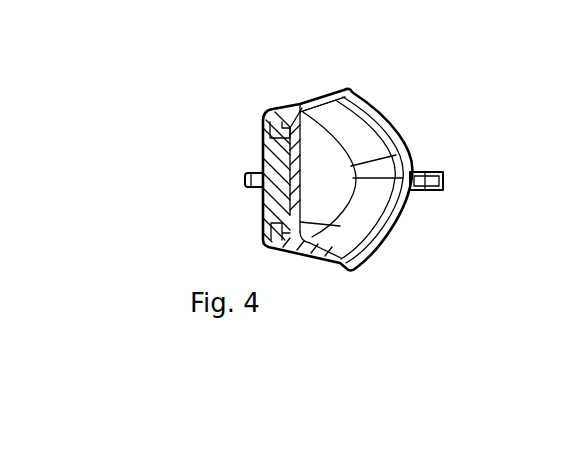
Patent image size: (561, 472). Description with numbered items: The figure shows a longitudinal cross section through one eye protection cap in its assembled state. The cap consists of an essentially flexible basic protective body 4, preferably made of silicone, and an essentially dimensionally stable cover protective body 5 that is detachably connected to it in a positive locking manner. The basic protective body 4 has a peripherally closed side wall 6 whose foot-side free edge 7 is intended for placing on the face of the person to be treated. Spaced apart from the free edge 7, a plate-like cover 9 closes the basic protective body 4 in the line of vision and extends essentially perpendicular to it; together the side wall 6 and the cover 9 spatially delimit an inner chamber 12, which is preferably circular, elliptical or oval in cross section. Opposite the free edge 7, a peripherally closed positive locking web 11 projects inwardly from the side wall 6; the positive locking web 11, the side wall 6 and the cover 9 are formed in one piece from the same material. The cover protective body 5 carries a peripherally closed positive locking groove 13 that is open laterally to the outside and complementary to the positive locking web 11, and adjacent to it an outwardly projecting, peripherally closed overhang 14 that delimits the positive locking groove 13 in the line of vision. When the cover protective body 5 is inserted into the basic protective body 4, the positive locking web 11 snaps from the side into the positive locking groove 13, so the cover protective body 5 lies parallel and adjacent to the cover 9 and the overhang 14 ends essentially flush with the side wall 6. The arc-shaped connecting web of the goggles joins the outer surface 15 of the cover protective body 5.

The basic protective body 4 is at (366, 94).
The cover protective body 5 is at (261, 164).
The side wall 6 is at (326, 108).
The free edge 7 is at (402, 148).
The cover 9 is at (293, 217).
The positive locking web 11 is at (276, 126).
The inner chamber 12 is at (370, 210).
The positive locking groove 13 is at (298, 122).
The overhang 14 is at (266, 119).
The outer surface 15 is at (262, 226).